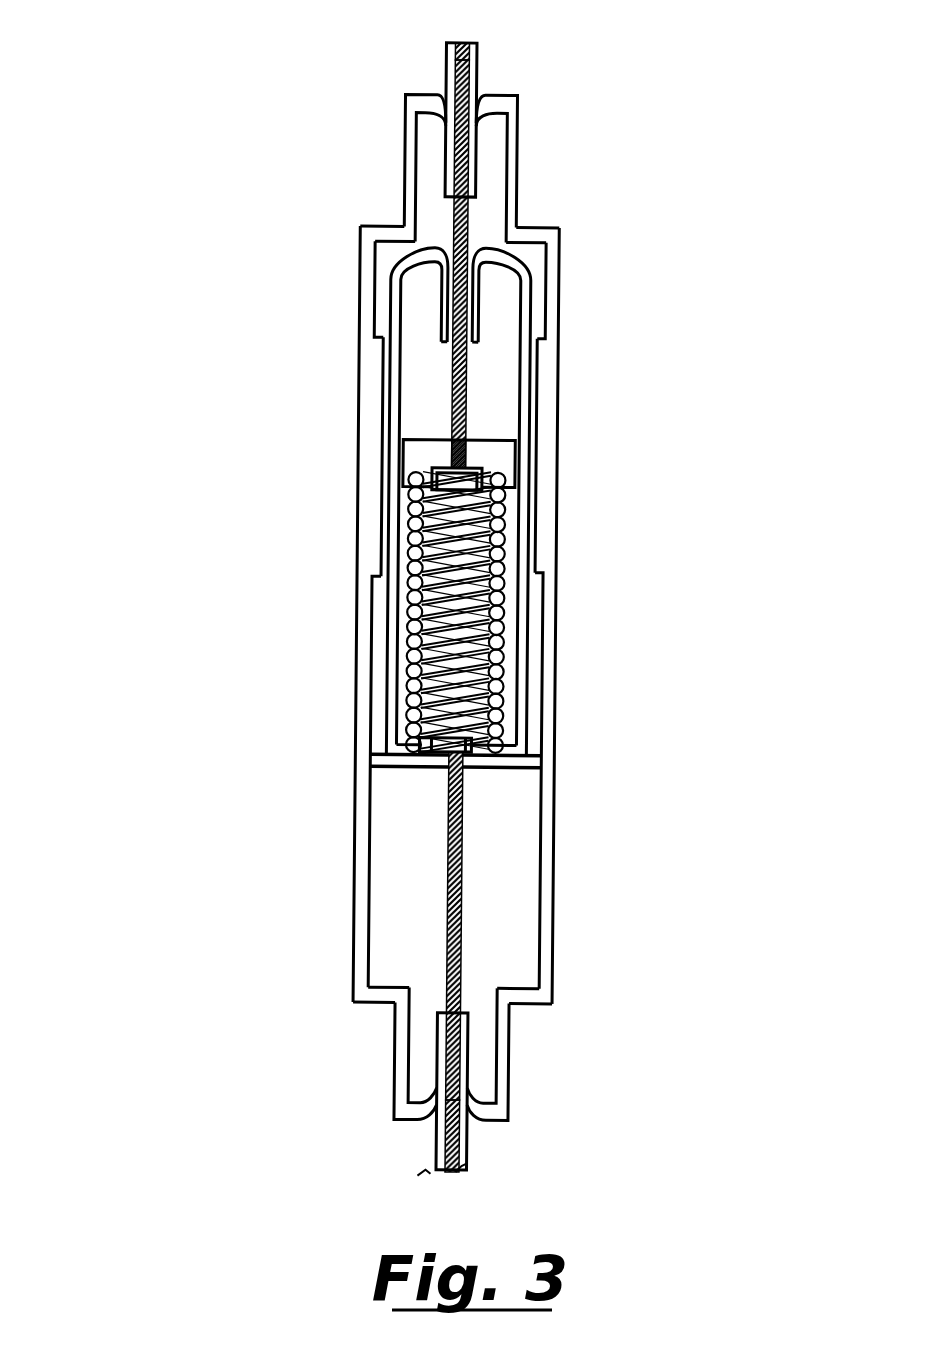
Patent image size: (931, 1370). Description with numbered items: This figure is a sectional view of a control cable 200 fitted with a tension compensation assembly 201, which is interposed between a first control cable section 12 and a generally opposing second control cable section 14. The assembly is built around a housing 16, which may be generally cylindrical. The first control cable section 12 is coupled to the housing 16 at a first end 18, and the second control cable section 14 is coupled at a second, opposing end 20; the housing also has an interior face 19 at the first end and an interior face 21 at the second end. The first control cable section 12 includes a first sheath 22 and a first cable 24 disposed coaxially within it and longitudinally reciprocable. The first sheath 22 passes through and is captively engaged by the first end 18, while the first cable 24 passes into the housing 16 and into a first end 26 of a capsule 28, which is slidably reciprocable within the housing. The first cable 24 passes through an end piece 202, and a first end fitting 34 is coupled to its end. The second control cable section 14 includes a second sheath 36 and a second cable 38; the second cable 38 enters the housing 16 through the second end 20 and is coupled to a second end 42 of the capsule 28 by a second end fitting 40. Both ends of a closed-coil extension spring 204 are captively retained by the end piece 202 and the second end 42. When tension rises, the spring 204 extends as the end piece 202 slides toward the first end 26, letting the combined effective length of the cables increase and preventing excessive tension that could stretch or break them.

The first control cable section 12 is at (447, 79).
The second control cable section 14 is at (478, 1131).
The housing 16 is at (562, 371).
The first end 18 is at (406, 170).
The interior face 19 is at (404, 255).
The second end 20 is at (511, 1076).
The interior face 21 is at (521, 988).
The first sheath 22 is at (478, 76).
The first cable 24 is at (468, 46).
The first end of capsule 26 is at (517, 271).
The capsule 28 is at (541, 420).
The first end fitting 34 is at (470, 520).
The second sheath 36 is at (438, 1147).
The second cable 38 is at (451, 1173).
The second end fitting 40 is at (470, 716).
The second end of capsule 42 is at (511, 758).
The control cable 200 is at (147, 250).
The tension compensation assembly 201 is at (568, 504).
The end piece 202 is at (415, 459).
The closed-coil extension spring 204 is at (410, 553).